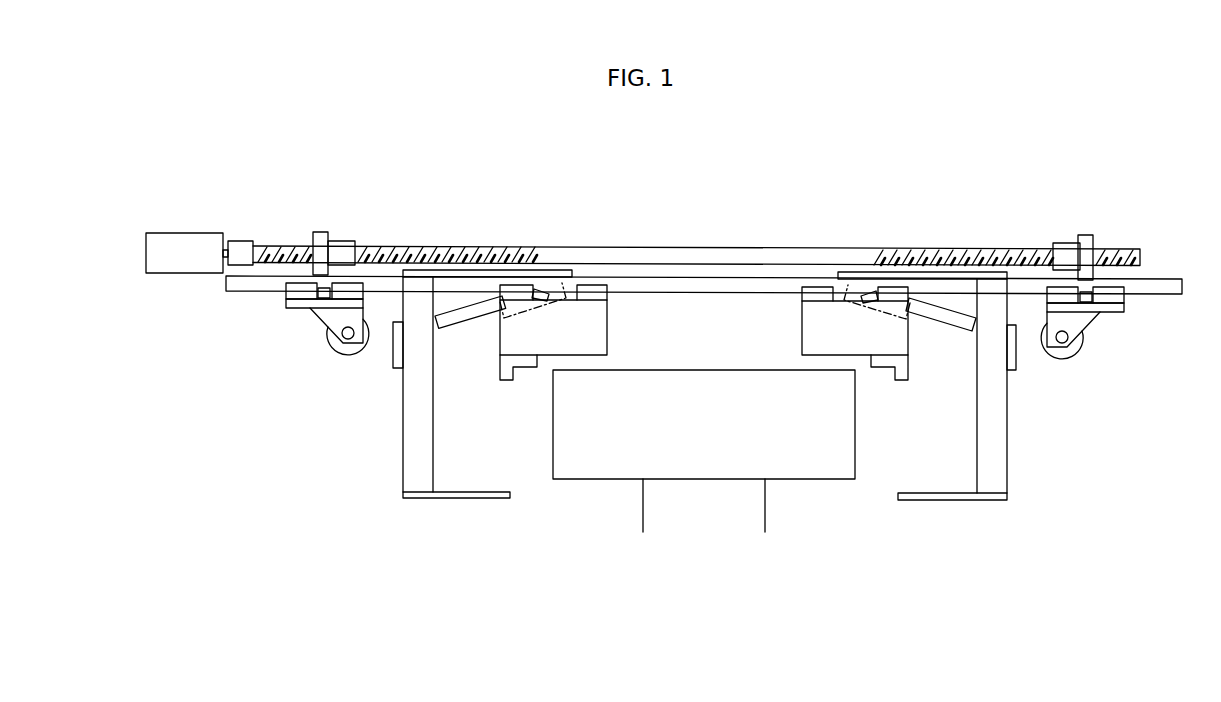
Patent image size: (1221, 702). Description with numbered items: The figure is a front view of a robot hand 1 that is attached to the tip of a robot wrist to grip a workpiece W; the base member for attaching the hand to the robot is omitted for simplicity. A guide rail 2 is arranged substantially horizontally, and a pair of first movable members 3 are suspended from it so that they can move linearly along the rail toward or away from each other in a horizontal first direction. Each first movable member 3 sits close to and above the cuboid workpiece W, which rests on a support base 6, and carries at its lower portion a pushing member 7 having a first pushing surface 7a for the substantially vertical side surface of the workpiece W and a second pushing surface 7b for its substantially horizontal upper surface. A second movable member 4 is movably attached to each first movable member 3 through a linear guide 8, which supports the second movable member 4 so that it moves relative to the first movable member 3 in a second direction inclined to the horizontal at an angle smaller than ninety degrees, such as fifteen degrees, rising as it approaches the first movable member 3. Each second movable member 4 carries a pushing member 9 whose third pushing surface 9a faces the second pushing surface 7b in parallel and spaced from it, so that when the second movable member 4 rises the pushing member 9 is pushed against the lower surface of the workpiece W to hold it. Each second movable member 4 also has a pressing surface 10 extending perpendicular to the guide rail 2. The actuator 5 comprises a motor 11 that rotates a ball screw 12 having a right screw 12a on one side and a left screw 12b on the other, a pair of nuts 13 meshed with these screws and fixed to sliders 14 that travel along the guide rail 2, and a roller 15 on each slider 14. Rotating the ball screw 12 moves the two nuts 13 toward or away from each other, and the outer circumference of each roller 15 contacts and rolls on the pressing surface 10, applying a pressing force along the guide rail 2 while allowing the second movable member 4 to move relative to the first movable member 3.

The robot hand 1 is at (985, 134).
The guide rail 2 is at (694, 278).
The first movable member 3 is at (625, 330).
The second movable member 4 is at (390, 455).
The actuator 5 is at (243, 334).
The support base 6 is at (766, 512).
The pushing member 7 is at (488, 385).
The first pushing surface 7a is at (513, 383).
The second pushing surface 7b is at (536, 369).
The linear guide 8 is at (455, 331).
The pushing member 9 is at (438, 511).
The third pushing surface 9a is at (476, 492).
The pressing surface 10 is at (393, 358).
The motor 11 is at (178, 233).
The ball screw 12 is at (880, 237).
The right screw 12a is at (437, 246).
The left screw 12b is at (973, 248).
The nut 13 is at (333, 232).
The slider 14 is at (302, 309).
The roller 15 is at (345, 356).
The workpiece W is at (590, 480).